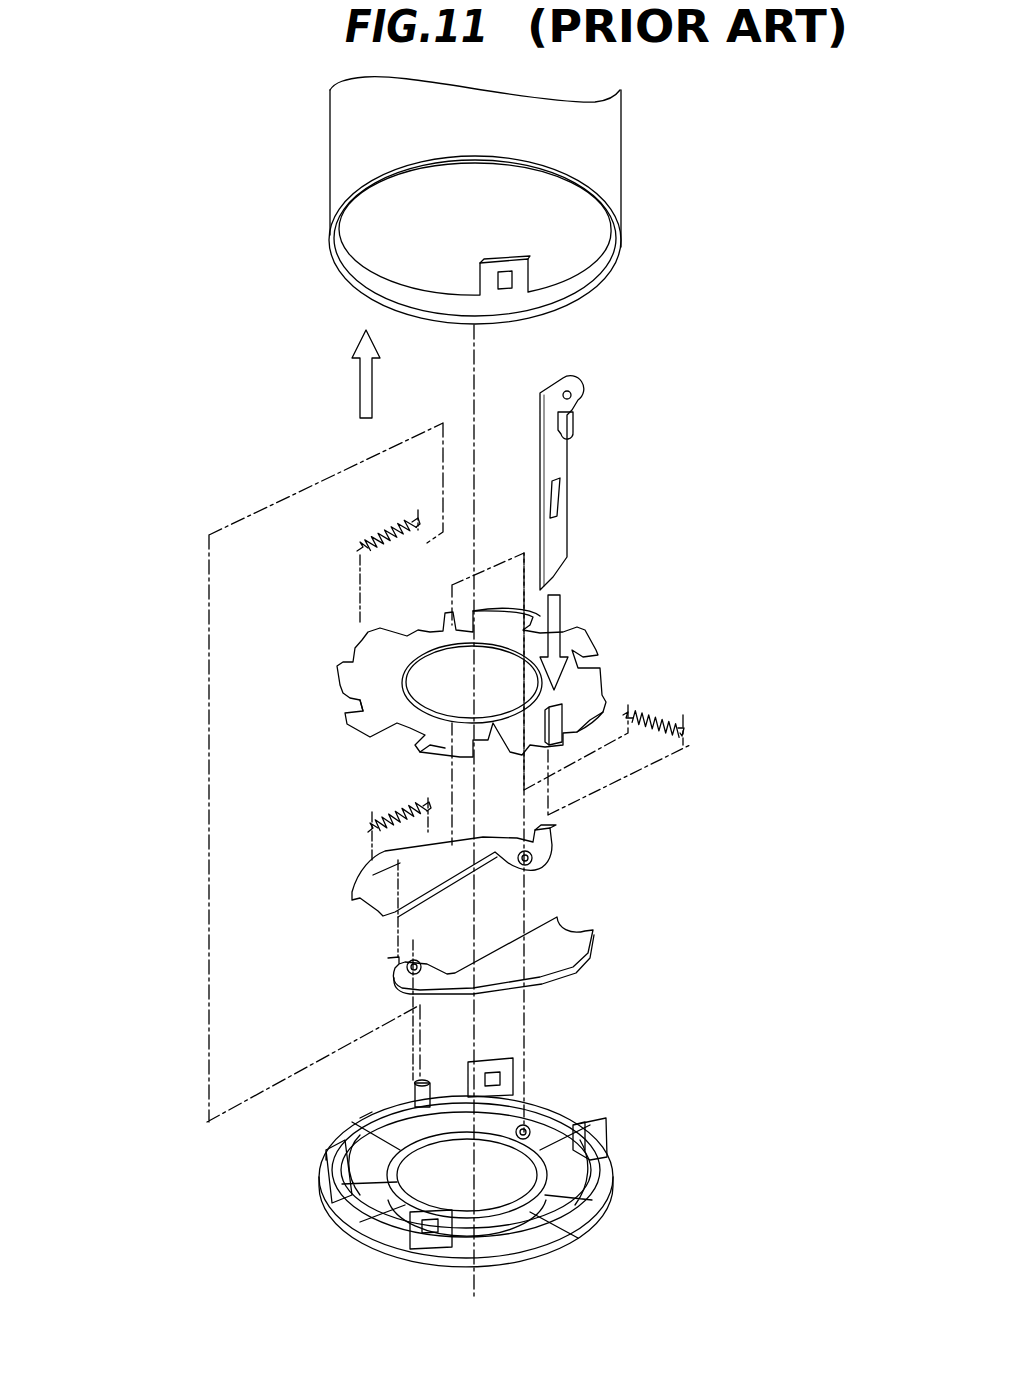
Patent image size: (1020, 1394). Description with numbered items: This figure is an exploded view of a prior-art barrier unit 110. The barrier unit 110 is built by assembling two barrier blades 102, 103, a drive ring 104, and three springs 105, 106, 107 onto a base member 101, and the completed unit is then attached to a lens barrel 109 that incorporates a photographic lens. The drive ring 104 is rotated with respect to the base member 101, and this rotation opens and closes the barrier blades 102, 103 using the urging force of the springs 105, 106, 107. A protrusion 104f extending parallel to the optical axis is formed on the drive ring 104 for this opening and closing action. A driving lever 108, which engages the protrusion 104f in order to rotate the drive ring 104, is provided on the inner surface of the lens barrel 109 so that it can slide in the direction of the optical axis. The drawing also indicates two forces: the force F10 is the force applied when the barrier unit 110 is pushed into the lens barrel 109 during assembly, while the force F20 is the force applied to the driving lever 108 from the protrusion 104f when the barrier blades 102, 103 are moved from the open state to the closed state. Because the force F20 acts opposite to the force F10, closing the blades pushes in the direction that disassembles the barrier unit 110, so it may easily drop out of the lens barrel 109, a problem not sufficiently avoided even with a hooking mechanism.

The base member 101 is at (562, 1258).
The barrier blade 102 is at (595, 975).
The barrier blade 103 is at (568, 845).
The drive ring 104 is at (612, 663).
The protrusion 104f is at (605, 700).
The spring 105 is at (385, 812).
The spring 106 is at (665, 720).
The spring 107 is at (385, 534).
The driving lever 108 is at (573, 463).
The lens barrel 109 is at (625, 180).
The barrier unit 110 is at (180, 781).
The force applied when the barrier unit is assembled F10 is at (355, 390).
The force applied to the driving lever from the protrusion F20 is at (562, 598).